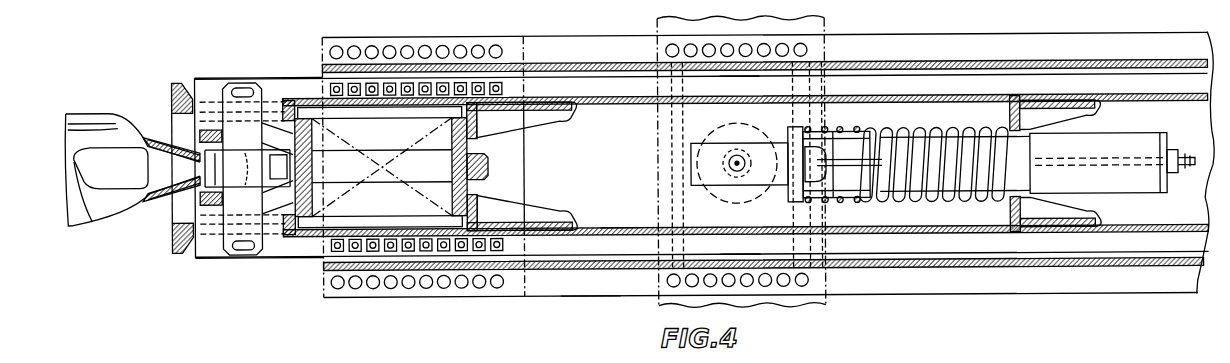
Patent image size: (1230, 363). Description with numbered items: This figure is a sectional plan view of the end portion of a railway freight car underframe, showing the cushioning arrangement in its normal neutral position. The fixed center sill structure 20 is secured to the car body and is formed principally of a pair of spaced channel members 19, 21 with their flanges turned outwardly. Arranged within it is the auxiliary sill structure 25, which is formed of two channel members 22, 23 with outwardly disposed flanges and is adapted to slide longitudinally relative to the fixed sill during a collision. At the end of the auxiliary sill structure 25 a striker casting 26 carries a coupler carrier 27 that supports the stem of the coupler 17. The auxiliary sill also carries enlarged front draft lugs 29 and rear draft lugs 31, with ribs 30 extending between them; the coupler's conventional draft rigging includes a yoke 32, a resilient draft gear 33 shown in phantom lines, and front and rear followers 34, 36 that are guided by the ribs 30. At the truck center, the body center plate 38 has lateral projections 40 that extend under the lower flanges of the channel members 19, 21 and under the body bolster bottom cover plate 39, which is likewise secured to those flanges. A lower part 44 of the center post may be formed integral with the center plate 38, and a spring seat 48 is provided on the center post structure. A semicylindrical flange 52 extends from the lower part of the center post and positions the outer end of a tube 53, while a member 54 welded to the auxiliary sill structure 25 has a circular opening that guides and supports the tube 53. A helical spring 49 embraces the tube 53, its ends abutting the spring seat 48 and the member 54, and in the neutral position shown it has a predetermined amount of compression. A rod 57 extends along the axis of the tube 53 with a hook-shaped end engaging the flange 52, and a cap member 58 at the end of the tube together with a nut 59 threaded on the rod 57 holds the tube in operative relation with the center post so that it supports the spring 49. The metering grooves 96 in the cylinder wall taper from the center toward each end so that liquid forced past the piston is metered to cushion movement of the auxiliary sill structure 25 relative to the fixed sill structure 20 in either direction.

The coupler 17 is at (105, 110).
The channel member 19 is at (584, 265).
The center sill structure 20 is at (583, 302).
The channel member 21 is at (622, 62).
The channel member 22 is at (313, 240).
The channel member 23 is at (316, 96).
The auxiliary sill structure 25 is at (613, 226).
The striker casting 26 is at (173, 88).
The coupler carrier 27 is at (177, 195).
The front draft lugs 29 is at (277, 118).
The ribs 30 is at (370, 112).
The rear draft lugs 31 is at (508, 125).
The yoke 32 is at (386, 174).
The resilient draft gear 33 is at (430, 140).
The front follower 34 is at (306, 165).
The rear follower 36 is at (458, 167).
The body center plate 38 is at (736, 200).
The body bolster bottom cover plate 39 is at (822, 24).
The lateral projections 40 is at (729, 102).
The lower part of the center post 44 is at (774, 170).
The spring seat 48 is at (793, 201).
The spring 49 is at (955, 132).
The semicylindrical flange 52 is at (829, 142).
The tube 53 is at (1113, 144).
The member 54 is at (1011, 118).
The rod 57 is at (848, 166).
The cap member 58 is at (1173, 151).
The nut 59 is at (1178, 170).
The metering grooves 96 is at (517, 167).